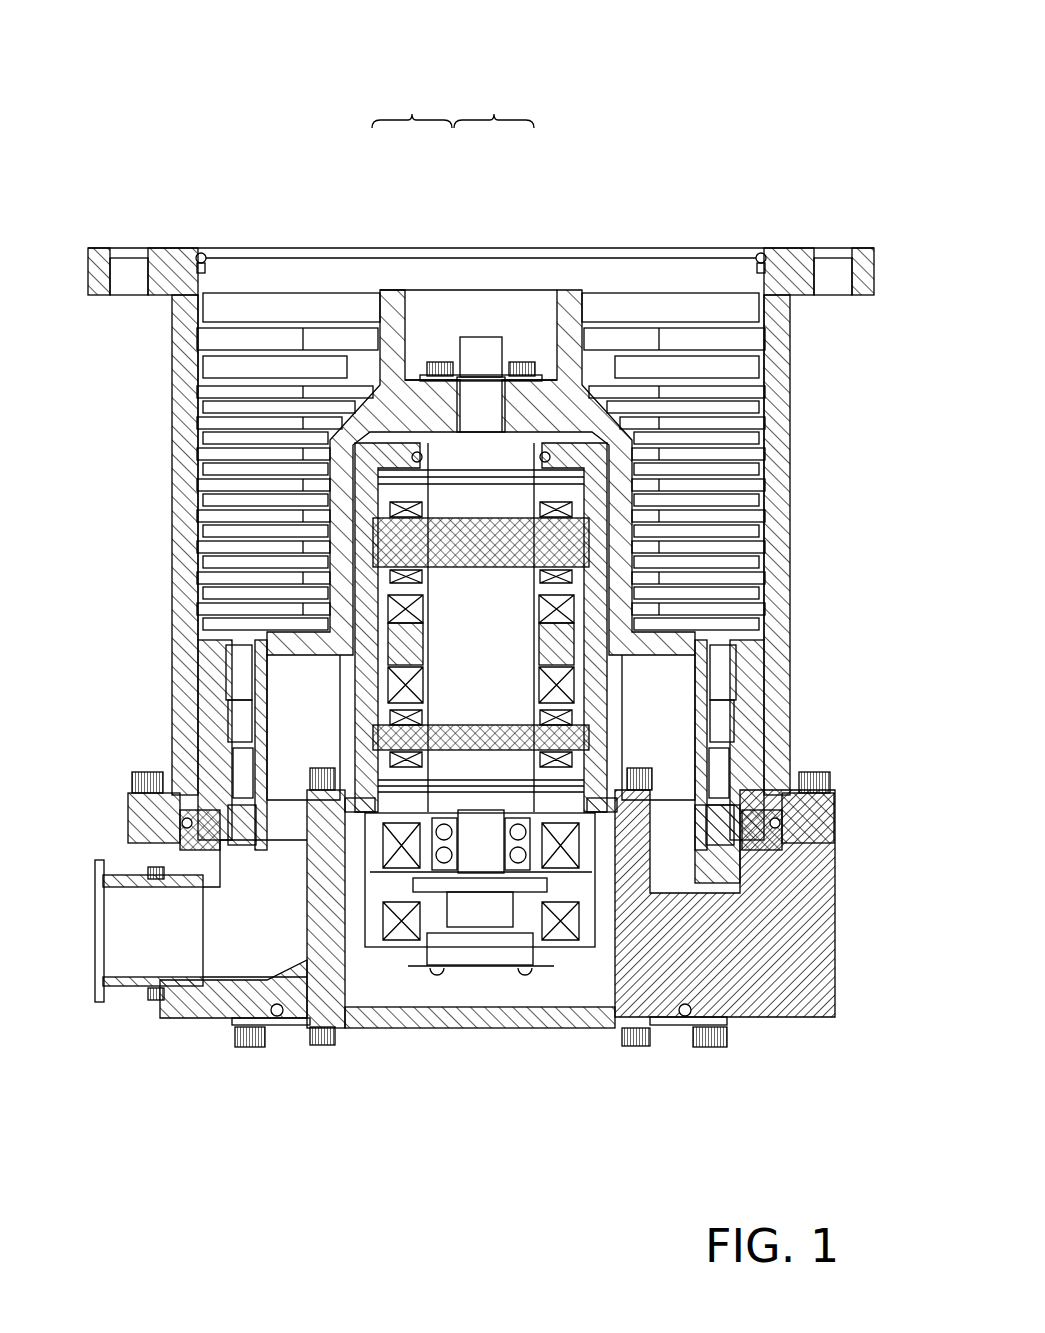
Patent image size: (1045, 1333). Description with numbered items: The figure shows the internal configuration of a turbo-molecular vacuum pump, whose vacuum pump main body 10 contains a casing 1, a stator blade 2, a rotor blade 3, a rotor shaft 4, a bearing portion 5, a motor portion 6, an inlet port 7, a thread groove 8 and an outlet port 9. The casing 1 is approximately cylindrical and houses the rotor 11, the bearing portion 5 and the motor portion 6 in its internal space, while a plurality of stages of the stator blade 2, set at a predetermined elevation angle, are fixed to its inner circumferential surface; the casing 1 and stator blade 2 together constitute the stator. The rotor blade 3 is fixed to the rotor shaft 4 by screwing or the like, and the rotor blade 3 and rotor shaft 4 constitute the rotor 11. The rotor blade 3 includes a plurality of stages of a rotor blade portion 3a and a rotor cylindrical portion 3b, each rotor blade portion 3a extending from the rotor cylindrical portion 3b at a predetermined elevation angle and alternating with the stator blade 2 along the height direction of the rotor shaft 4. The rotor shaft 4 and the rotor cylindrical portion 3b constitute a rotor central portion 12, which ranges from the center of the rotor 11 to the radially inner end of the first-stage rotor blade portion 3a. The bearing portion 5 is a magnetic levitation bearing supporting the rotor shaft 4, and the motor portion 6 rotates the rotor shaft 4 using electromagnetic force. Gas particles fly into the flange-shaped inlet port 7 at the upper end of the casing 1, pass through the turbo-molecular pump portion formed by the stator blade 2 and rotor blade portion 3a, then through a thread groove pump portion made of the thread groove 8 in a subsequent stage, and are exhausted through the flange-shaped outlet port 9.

The casing 1 is at (104, 256).
The stator blade 2 is at (481, 485).
The rotor blade 3 is at (336, 278).
The rotor blade portion 3a is at (482, 461).
The rotor cylindrical portion 3b is at (562, 300).
The rotor shaft 4 is at (482, 395).
The bearing portion 5 is at (490, 992).
The motor portion 6 is at (370, 662).
The inlet port 7 is at (686, 226).
The thread groove 8 is at (480, 761).
The outlet port 9 is at (124, 906).
The vacuum pump main body 10 is at (776, 68).
The rotor 11 is at (412, 108).
The rotor central portion 12 is at (494, 108).